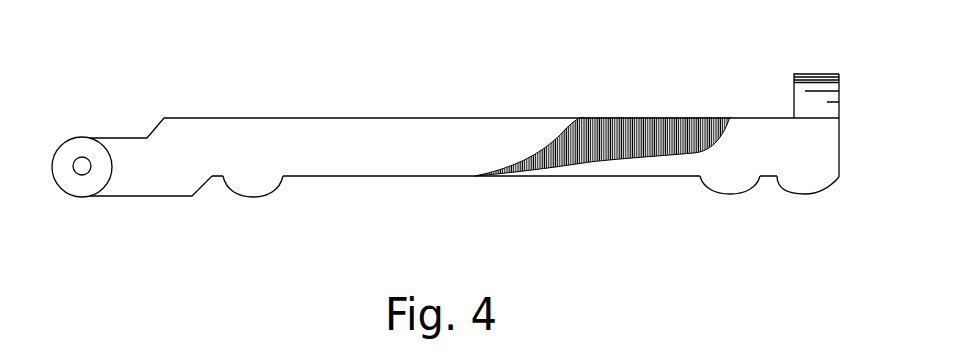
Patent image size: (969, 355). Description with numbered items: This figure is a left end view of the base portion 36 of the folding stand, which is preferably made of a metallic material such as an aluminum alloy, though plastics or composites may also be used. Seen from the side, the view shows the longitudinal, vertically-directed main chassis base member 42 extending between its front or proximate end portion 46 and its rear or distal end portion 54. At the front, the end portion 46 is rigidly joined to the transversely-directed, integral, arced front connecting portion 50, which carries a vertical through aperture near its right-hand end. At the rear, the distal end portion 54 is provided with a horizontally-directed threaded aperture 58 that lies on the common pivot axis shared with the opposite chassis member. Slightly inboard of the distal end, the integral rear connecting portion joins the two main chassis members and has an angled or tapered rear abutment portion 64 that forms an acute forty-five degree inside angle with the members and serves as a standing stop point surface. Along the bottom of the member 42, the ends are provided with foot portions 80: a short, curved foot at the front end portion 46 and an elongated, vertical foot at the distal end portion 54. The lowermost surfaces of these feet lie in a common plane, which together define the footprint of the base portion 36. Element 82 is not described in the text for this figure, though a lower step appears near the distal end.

The base portion 36 is at (60, 68).
The main chassis base member 42 is at (398, 140).
The front end portion 46 is at (825, 142).
The front connecting portion 50 is at (803, 102).
The distal end portion 54 is at (88, 148).
The threaded aperture 58 is at (86, 177).
The angled abutment portion 64 is at (153, 128).
The foot portions 80 is at (250, 197).
The lower step 82 is at (155, 197).